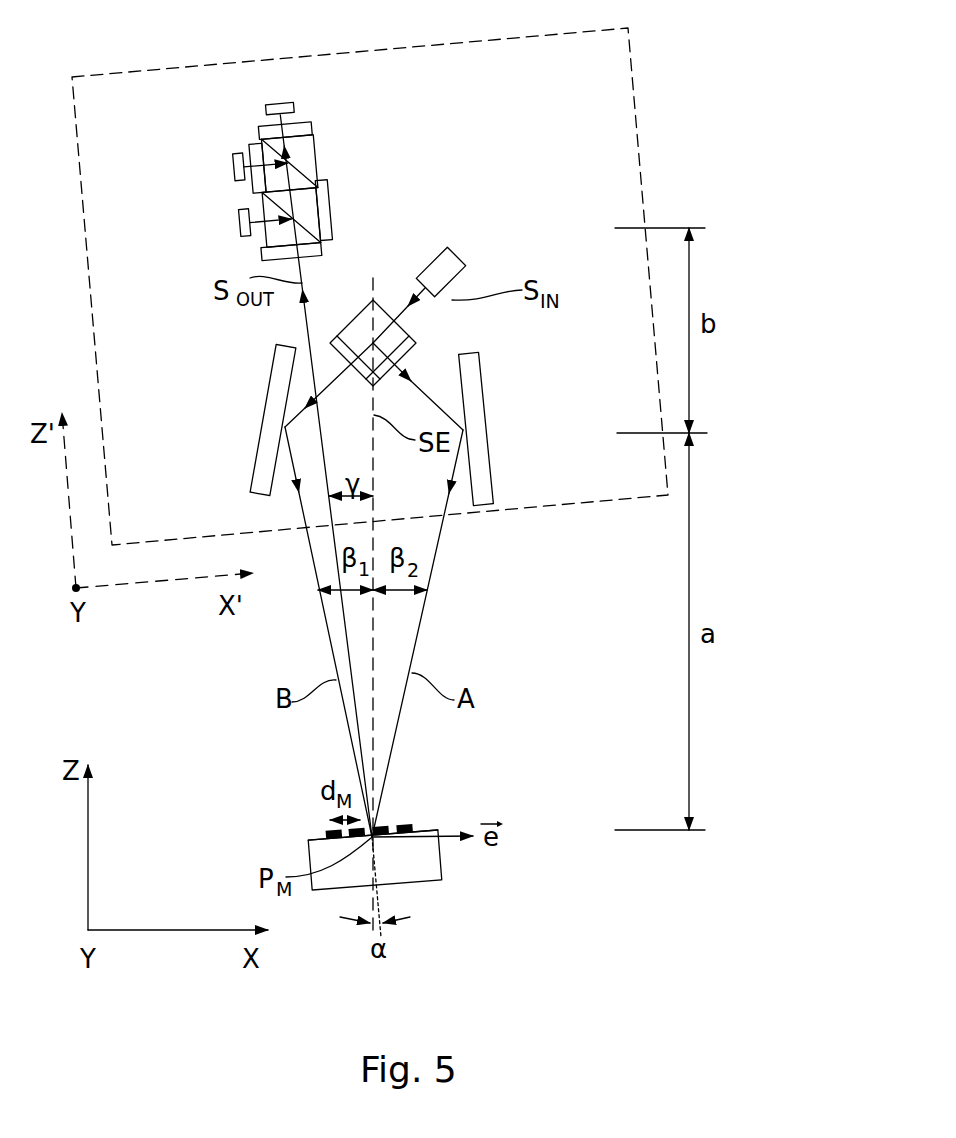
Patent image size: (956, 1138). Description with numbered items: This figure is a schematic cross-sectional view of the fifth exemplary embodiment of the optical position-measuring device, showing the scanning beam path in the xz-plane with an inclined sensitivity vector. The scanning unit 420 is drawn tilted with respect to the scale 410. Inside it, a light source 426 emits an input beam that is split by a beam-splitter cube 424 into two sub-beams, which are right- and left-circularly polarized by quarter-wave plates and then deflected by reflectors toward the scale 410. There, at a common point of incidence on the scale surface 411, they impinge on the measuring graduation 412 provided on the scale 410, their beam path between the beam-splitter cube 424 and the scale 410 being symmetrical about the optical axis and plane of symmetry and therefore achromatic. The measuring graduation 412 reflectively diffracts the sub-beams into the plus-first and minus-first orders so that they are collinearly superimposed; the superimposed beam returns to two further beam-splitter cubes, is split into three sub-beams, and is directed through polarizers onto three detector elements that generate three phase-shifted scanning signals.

The optical unit 420 is at (628, 72).
The beam-splitter cube 424 is at (374, 299).
The light source 426 is at (453, 258).
The scale 410 is at (455, 875).
The measurement object surface 411 is at (311, 856).
The measuring graduation 412 is at (405, 820).